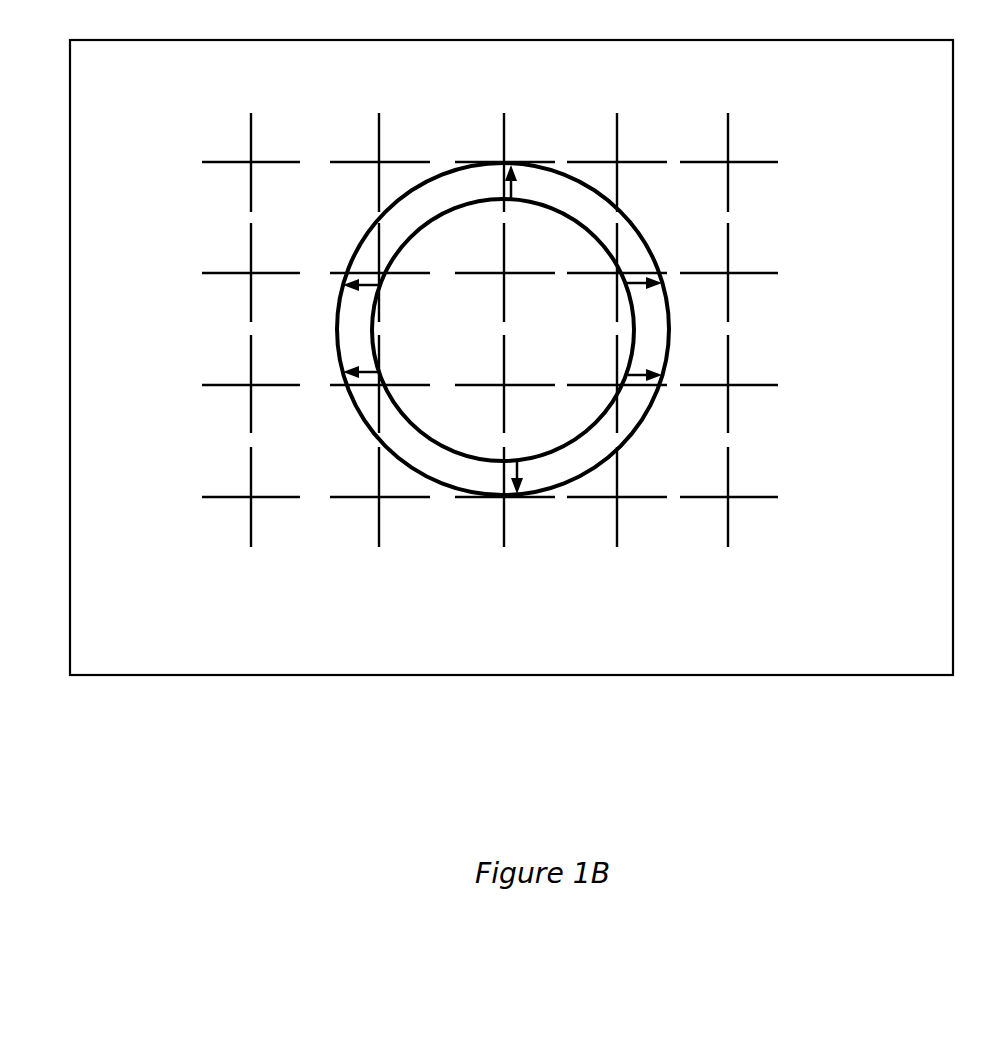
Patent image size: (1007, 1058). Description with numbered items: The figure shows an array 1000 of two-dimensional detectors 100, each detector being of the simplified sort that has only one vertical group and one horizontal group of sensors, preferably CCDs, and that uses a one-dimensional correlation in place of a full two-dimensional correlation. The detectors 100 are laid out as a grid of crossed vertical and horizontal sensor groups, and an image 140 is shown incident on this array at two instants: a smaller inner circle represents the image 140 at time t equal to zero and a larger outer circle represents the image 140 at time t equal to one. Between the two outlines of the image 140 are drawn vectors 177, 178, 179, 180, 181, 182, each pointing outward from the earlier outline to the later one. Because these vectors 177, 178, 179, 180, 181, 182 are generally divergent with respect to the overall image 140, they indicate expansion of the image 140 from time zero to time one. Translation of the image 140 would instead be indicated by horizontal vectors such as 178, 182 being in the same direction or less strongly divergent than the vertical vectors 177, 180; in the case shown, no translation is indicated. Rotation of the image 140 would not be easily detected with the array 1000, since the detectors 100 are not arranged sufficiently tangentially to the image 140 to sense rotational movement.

The two-dimensional detector 100 is at (260, 160).
The image 140 is at (610, 165).
The vector 177 is at (514, 172).
The vector 178 is at (623, 287).
The vector 179 is at (633, 370).
The vector 180 is at (520, 486).
The vector 181 is at (370, 368).
The vector 182 is at (370, 290).
The array 1000 is at (828, 683).